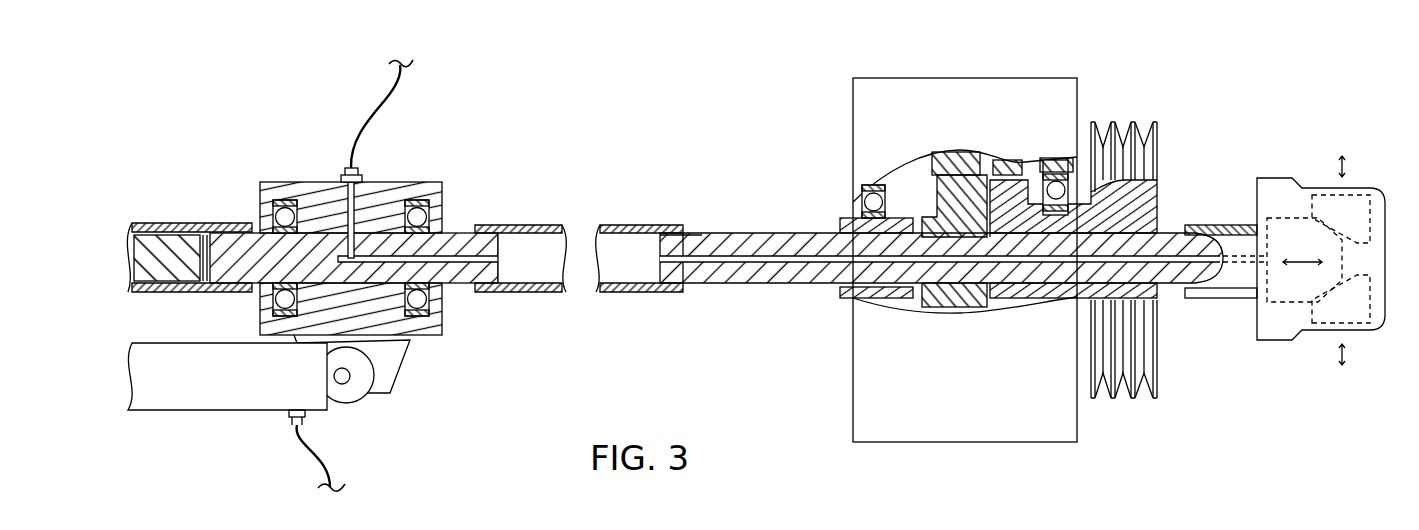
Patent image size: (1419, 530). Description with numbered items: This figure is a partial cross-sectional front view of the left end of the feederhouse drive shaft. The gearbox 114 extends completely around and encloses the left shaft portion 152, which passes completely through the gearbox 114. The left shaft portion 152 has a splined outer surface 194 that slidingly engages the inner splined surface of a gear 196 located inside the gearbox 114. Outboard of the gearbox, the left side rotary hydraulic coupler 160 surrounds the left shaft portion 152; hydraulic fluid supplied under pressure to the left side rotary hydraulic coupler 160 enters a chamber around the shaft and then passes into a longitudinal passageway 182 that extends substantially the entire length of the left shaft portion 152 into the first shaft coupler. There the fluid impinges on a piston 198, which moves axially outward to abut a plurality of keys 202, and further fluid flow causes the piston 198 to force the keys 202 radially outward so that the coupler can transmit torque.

The gearbox 114 is at (965, 78).
The left shaft portion 152 is at (758, 232).
The left side rotary hydraulic coupler 160 is at (418, 182).
The longitudinal passageway 182 is at (450, 264).
The splined outer surface 194 is at (818, 284).
The gear 196 is at (953, 300).
The piston 198 is at (1283, 217).
The plurality of keys 202 is at (1330, 195).